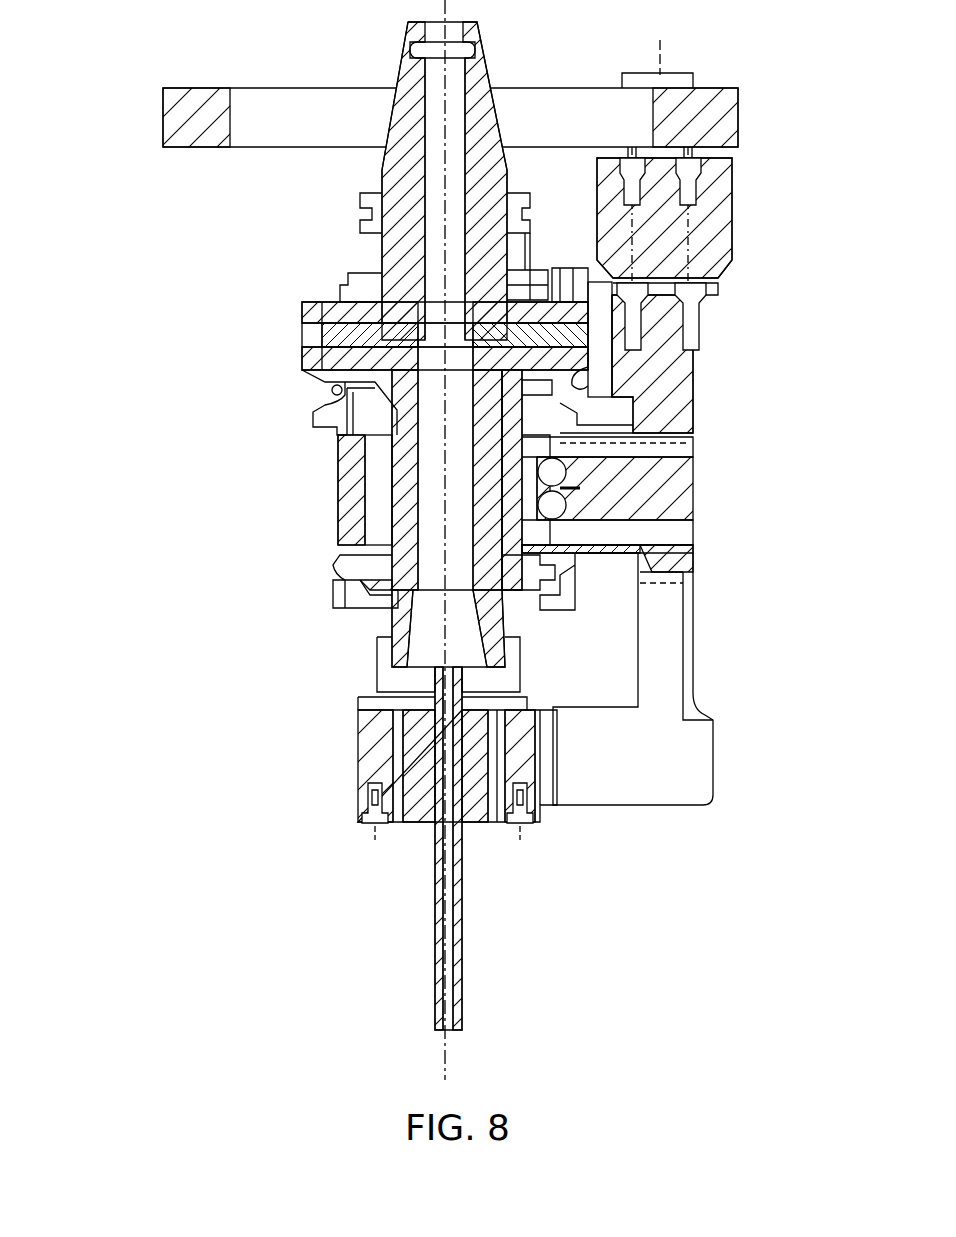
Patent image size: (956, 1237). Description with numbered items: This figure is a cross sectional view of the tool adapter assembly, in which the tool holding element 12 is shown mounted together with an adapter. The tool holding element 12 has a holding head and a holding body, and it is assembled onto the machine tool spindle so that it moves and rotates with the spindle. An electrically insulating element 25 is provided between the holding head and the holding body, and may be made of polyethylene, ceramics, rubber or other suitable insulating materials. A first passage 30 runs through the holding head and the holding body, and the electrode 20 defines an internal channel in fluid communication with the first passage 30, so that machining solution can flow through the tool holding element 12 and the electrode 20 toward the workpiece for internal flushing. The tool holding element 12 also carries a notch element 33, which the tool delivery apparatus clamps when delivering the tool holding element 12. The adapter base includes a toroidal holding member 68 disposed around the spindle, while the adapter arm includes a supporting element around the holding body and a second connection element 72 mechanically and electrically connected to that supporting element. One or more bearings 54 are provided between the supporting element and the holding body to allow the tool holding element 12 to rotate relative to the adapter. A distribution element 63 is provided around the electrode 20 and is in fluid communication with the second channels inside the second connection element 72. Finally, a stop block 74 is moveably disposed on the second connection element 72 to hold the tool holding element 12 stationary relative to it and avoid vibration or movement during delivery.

The tool holding element 12 is at (408, 32).
The toroidal holding member 68 is at (163, 120).
The notch element 33 is at (360, 212).
The electrically insulating element 25 is at (302, 330).
The bearing 54 is at (355, 420).
The first passage 30 is at (432, 470).
The stop block 74 is at (655, 362).
The second connection element 72 is at (678, 492).
The distribution element 63 is at (358, 762).
The electrode 20 is at (435, 968).